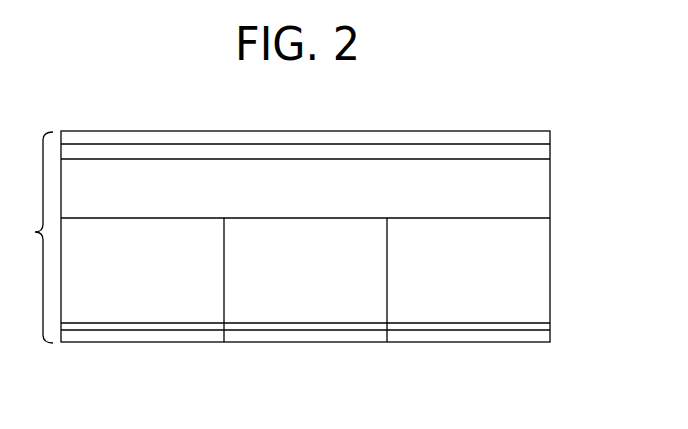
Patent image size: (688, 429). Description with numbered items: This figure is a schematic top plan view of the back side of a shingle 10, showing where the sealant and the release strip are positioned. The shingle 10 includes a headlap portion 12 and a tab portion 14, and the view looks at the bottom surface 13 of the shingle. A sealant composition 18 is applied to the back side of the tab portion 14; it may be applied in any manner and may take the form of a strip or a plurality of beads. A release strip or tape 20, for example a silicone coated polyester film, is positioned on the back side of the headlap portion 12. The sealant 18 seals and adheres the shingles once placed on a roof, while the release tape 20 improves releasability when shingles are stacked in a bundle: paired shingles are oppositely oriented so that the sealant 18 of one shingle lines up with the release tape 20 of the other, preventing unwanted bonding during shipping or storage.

The shingle 10 is at (449, 113).
The headlap portion 12 is at (552, 195).
The bottom surface 13 is at (30, 237).
The tab portion 14 is at (552, 280).
The sealant composition 18 is at (504, 327).
The release strip or tape 20 is at (545, 151).